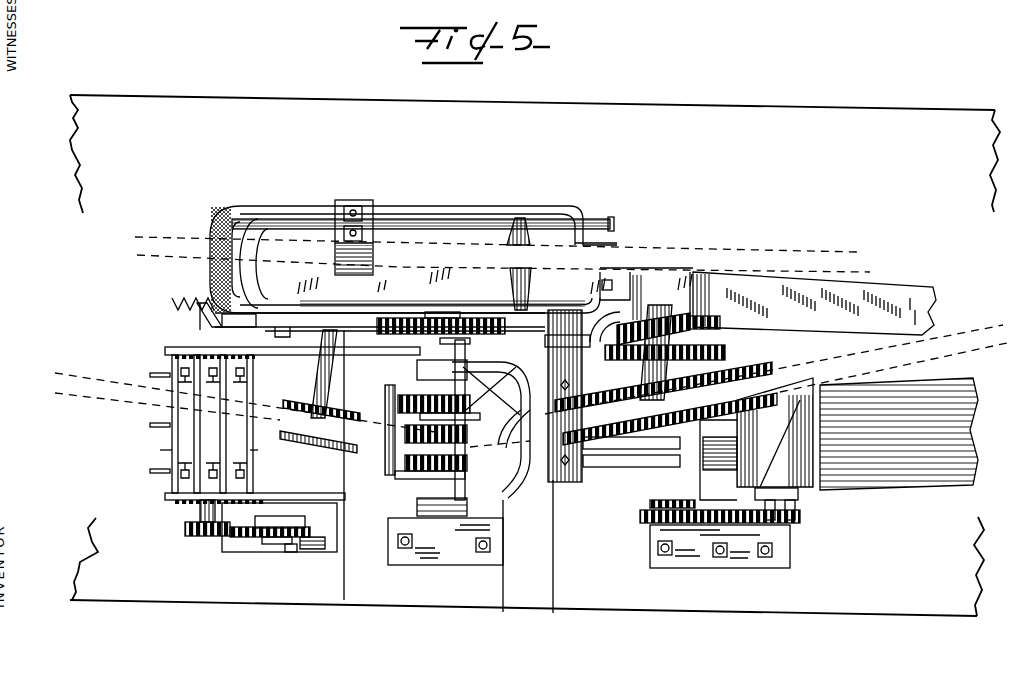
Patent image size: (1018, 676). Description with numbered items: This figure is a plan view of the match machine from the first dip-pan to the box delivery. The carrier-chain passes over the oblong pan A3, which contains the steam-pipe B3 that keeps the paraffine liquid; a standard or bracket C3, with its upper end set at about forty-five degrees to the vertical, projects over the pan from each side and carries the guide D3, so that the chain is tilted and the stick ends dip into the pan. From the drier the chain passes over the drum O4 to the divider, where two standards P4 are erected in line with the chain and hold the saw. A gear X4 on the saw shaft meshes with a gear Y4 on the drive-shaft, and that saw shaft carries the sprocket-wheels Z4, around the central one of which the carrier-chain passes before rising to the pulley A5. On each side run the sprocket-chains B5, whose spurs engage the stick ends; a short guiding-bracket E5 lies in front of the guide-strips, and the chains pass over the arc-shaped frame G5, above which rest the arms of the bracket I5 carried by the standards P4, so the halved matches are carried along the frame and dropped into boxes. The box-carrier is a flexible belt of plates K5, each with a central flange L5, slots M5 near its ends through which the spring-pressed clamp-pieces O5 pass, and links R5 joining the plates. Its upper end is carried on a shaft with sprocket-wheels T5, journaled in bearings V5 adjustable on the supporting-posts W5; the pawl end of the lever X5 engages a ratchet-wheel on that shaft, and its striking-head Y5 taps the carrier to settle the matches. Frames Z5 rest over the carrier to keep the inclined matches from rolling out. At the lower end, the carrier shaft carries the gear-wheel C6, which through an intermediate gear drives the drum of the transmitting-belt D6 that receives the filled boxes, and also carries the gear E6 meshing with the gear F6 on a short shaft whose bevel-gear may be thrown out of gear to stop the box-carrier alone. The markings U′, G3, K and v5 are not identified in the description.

The steam-pipe B3 is at (302, 290).
The standard or bracket C3 is at (373, 203).
The guide D3 is at (502, 244).
The shaft axis U′ is at (531, 343).
The pan A3 is at (212, 278).
The gear X4 is at (395, 318).
The gear Y4 is at (458, 318).
The standard G3 is at (640, 306).
The lever X5 is at (233, 321).
The striking-head Y5 is at (390, 350).
The slots M5 is at (182, 375).
The clamp-pieces O5 is at (190, 423).
The central flange L5 is at (149, 424).
The plates K5 is at (158, 458).
The bar K is at (248, 451).
The spring v5 is at (172, 299).
The sprocket-wheels T5 is at (192, 347).
The pulley A5 is at (305, 404).
The links R5 is at (185, 497).
The bearings V5 is at (212, 537).
The supporting-posts W5 is at (292, 530).
The sprocket-chains B5 is at (400, 405).
The sprocket-wheels Z4 is at (408, 433).
The bracket I5 is at (405, 462).
The arc-shaped frame G5 is at (395, 475).
The standards P4 is at (434, 370).
The guiding-bracket E5 is at (506, 385).
The gear E6 is at (728, 353).
The frames Z5 is at (650, 470).
The drum O4 is at (780, 406).
The gear F6 is at (720, 453).
The transmitting-belt D6 is at (866, 449).
The gear-wheel C6 is at (650, 529).